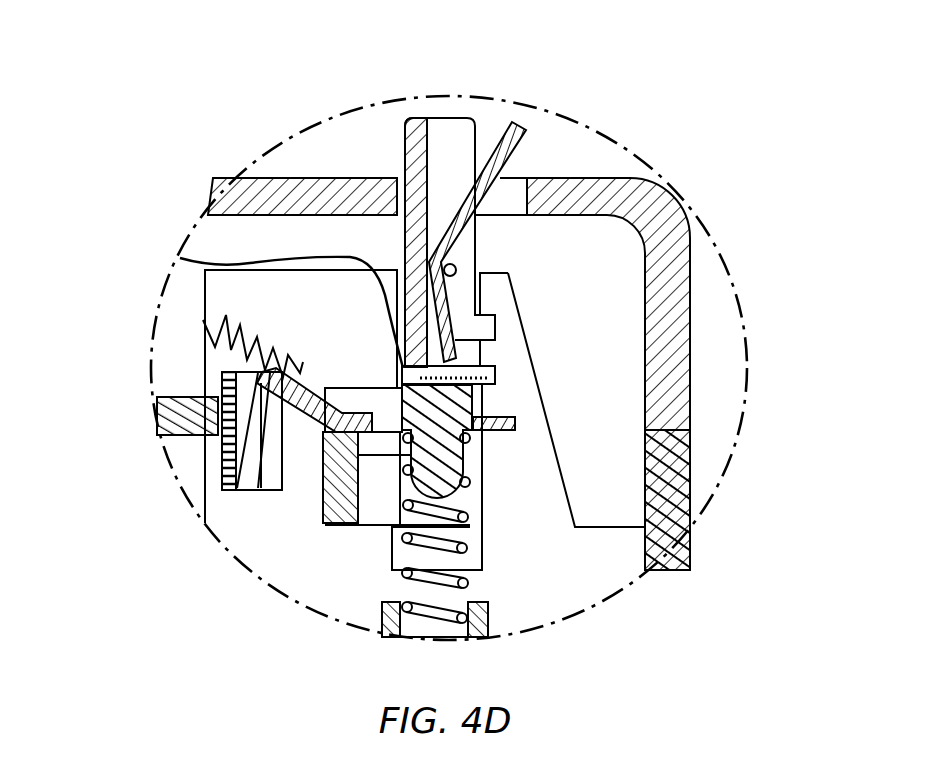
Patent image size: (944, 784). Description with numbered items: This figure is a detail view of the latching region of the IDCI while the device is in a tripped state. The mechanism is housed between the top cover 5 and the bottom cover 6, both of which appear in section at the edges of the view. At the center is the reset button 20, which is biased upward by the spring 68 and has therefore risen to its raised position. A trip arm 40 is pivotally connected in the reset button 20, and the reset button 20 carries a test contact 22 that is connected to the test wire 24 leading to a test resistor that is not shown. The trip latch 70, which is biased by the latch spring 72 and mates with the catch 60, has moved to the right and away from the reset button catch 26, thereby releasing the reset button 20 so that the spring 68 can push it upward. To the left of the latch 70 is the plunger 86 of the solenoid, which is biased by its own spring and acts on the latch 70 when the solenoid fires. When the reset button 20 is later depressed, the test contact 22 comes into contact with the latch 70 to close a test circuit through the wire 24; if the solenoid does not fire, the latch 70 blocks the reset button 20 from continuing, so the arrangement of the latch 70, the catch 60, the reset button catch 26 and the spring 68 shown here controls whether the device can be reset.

The top cover 5 is at (665, 190).
The bottom cover 6 is at (690, 480).
The reset button 20 is at (457, 143).
The test contact 22 is at (487, 392).
The test wire 24 is at (210, 262).
The reset button catch 26 is at (490, 357).
The trip arm 40 is at (523, 128).
The catch 60 is at (338, 512).
The spring 68 is at (443, 540).
The trip latch 70 is at (272, 493).
The latch spring 72 is at (205, 320).
The plunger 86 is at (158, 430).